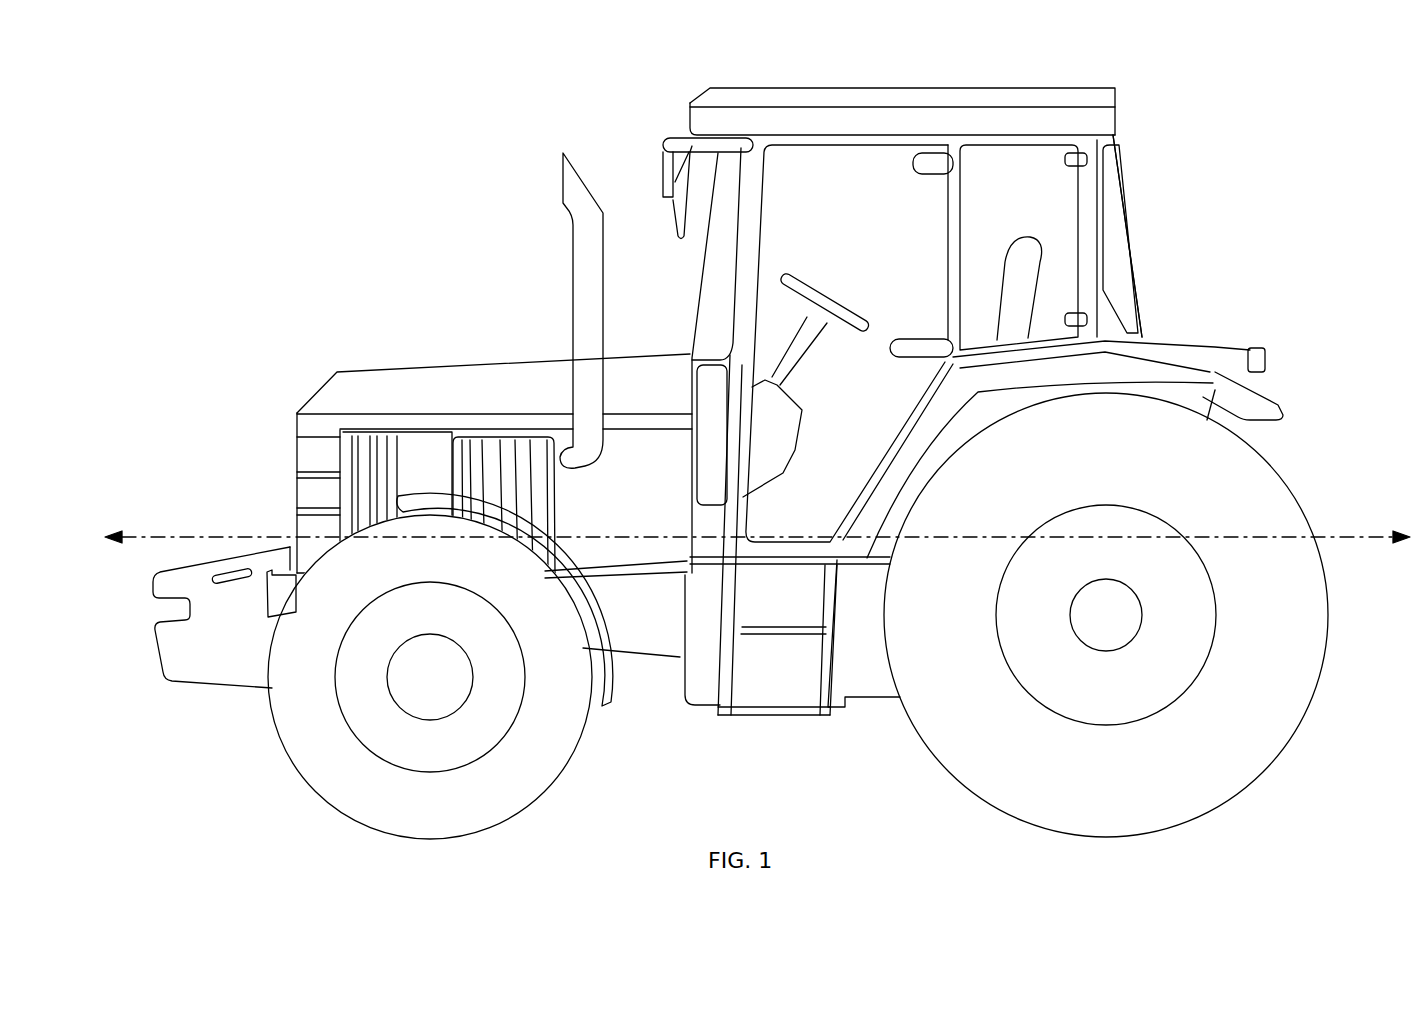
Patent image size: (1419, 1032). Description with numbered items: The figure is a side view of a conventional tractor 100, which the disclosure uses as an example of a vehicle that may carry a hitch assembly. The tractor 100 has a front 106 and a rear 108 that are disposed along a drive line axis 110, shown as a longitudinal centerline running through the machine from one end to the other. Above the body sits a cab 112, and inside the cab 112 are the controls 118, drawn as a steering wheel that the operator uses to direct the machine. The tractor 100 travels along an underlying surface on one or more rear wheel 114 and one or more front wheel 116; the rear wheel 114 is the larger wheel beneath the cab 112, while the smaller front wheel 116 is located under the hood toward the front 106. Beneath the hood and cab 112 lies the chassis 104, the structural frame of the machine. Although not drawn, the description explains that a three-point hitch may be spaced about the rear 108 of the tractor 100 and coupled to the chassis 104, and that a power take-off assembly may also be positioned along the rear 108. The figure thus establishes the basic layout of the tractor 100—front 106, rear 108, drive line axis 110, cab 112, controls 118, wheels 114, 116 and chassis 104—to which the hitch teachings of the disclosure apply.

The tractor 100 is at (350, 252).
The chassis 104 is at (653, 627).
The front 106 is at (112, 598).
The rear 108 is at (1375, 480).
The drive line axis 110 is at (236, 533).
The cab 112 is at (1133, 183).
The rear wheel 114 is at (1050, 785).
The front wheel 116 is at (512, 782).
The controls 118 is at (822, 285).